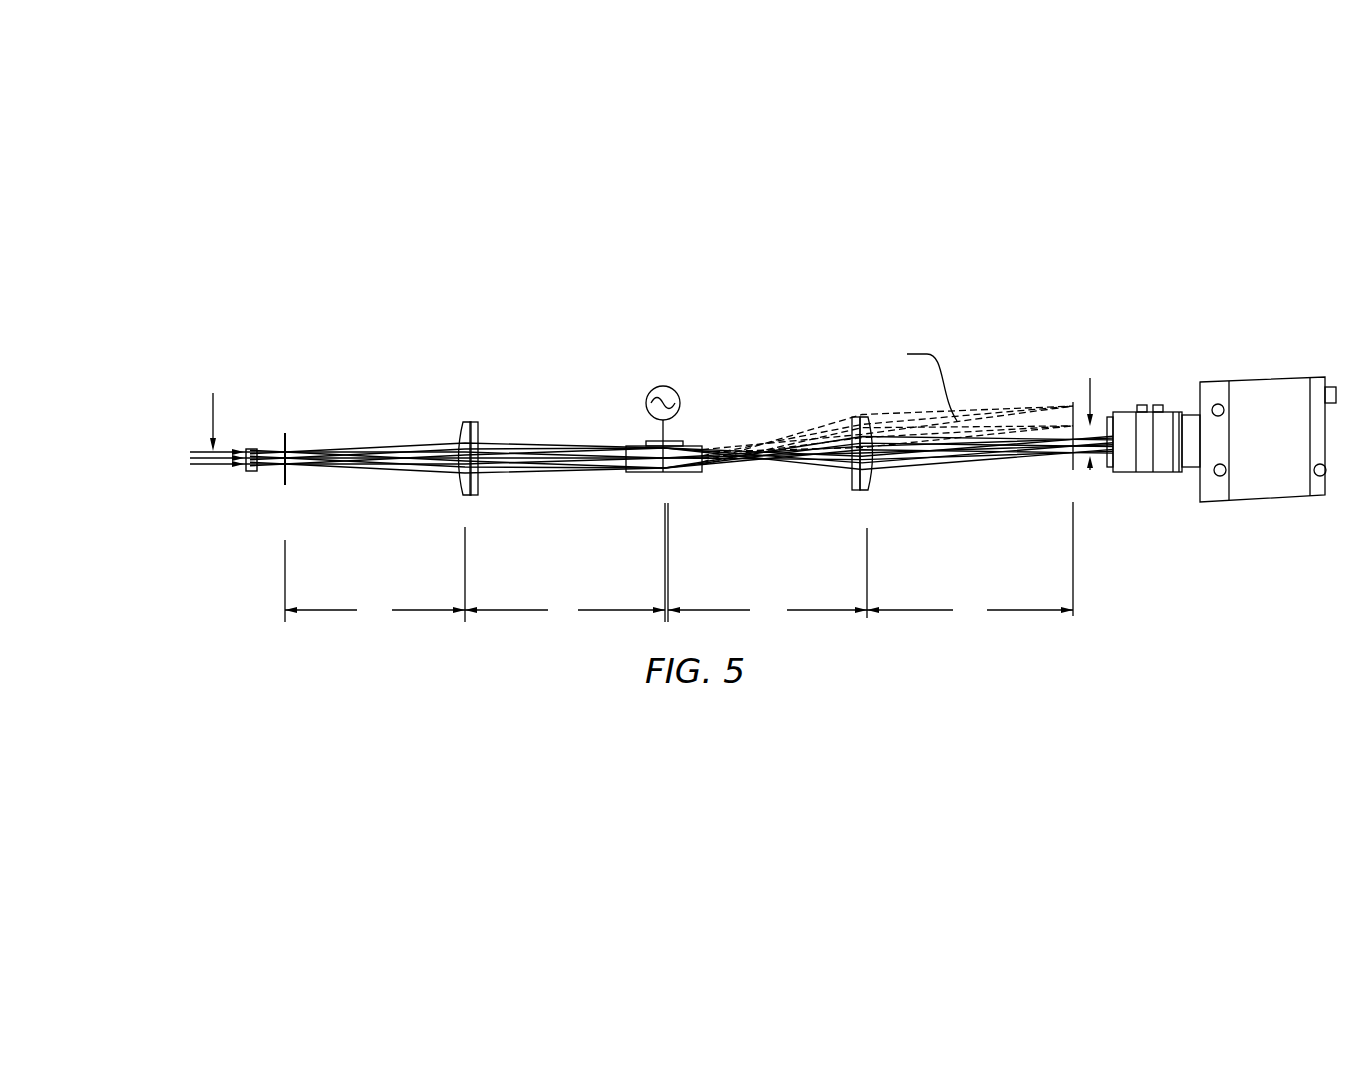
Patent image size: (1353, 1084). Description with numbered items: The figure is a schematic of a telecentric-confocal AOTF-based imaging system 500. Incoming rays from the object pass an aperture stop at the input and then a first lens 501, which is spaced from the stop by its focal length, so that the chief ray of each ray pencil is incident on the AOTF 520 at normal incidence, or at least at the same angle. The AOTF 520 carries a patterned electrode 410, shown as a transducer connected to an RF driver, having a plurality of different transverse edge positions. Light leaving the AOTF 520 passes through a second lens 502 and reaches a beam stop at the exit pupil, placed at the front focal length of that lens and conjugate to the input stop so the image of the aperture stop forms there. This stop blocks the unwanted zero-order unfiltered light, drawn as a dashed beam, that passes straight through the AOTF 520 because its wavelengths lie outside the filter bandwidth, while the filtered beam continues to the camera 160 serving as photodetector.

The telecentric-confocal AOTF-based imaging system 500 is at (694, 516).
The lens 501 is at (468, 460).
The lens 502 is at (859, 456).
The patterned electrode 410 is at (645, 440).
The AOTF 520 is at (638, 454).
The camera 160 is at (1250, 498).